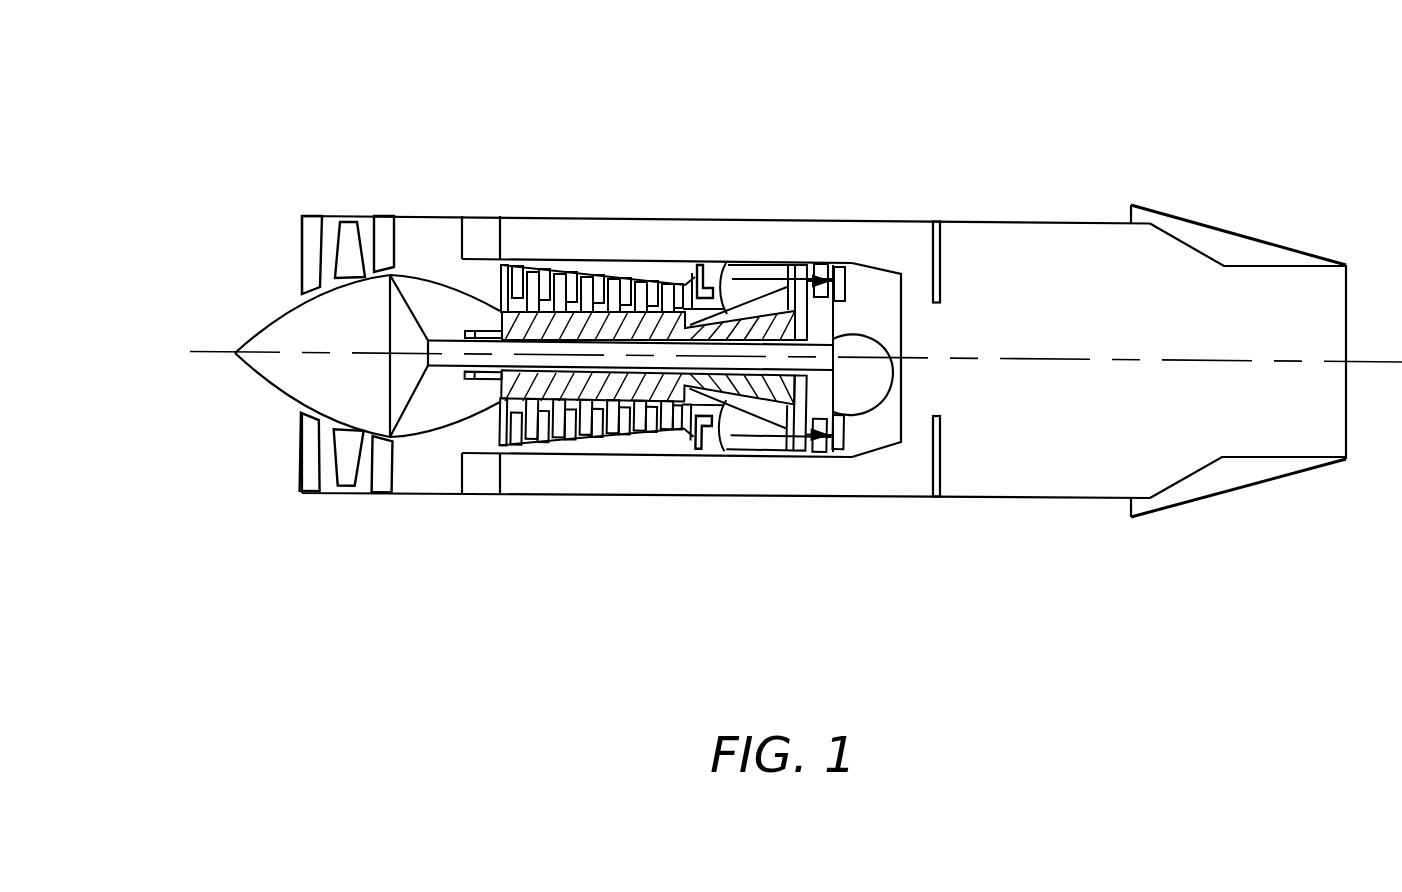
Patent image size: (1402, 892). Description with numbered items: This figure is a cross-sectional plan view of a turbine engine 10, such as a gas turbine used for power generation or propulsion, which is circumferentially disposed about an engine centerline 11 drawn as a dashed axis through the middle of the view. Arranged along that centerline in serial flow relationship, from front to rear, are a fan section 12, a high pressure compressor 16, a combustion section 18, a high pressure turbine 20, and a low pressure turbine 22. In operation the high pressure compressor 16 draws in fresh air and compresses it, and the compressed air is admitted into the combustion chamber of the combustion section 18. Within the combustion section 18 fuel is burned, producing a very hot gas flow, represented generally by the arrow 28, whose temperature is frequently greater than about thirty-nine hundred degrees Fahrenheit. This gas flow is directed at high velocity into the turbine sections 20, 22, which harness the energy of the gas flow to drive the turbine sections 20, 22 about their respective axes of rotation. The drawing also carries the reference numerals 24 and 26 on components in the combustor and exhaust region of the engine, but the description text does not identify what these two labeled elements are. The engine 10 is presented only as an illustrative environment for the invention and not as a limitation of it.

The turbine engine 10 is at (256, 131).
The engine centerline 11 is at (156, 353).
The fan section 12 is at (363, 222).
The high pressure compressor 16 is at (597, 258).
The combustion section 18 is at (756, 261).
The high pressure turbine 20 is at (808, 262).
The low pressure turbine 22 is at (878, 277).
The fuel injector 24 is at (722, 262).
The exhaust center body 26 is at (886, 335).
The arrow 28 is at (745, 432).